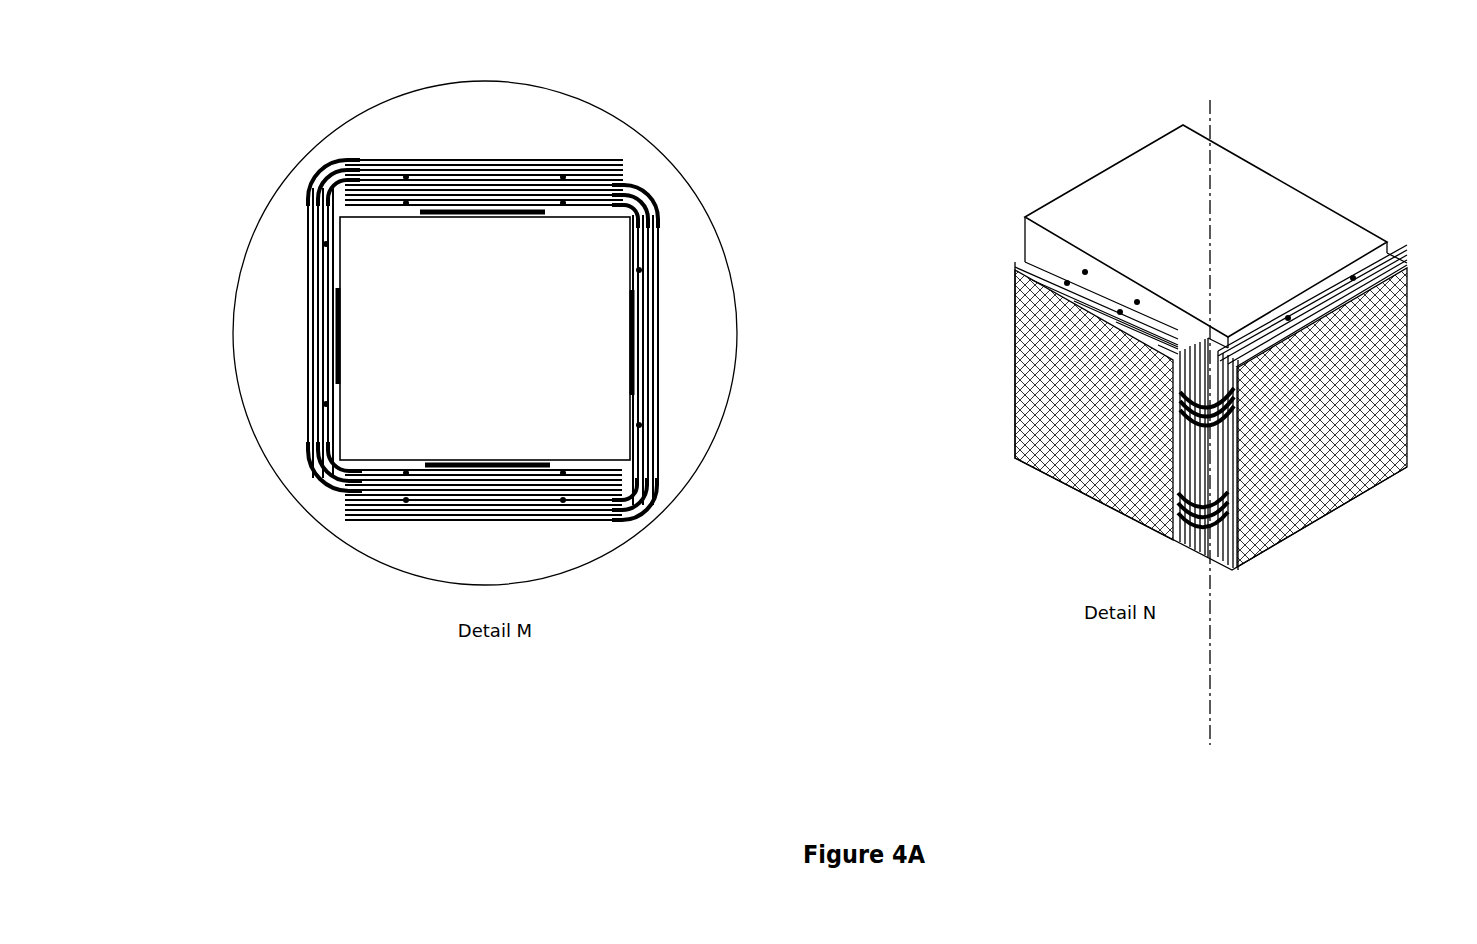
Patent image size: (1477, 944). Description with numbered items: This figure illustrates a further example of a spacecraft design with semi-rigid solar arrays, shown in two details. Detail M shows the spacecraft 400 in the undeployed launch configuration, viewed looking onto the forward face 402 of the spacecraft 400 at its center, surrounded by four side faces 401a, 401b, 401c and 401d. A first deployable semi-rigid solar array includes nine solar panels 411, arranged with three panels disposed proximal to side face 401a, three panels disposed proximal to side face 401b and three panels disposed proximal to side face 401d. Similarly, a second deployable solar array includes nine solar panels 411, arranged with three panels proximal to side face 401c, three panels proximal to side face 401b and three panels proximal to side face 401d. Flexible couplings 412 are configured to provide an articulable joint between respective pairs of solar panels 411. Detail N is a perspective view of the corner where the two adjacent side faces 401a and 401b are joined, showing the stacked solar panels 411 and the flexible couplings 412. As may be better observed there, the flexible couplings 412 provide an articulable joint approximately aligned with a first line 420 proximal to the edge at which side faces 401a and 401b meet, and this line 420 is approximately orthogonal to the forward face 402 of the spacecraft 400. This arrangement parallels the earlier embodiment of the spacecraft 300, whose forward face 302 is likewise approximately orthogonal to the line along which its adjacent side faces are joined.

The spacecraft 300 is at (1114, 80).
The forward face 302 is at (549, 273).
The spacecraft 400 is at (503, 128).
The side face 401a is at (644, 272).
The side face 401b is at (578, 465).
The side face 401c is at (336, 237).
The side face 401d is at (368, 216).
The forward face 402 is at (1282, 192).
The solar panels 411 is at (1040, 352).
The flexible couplings 412 is at (642, 520).
The first line 420 is at (1213, 620).